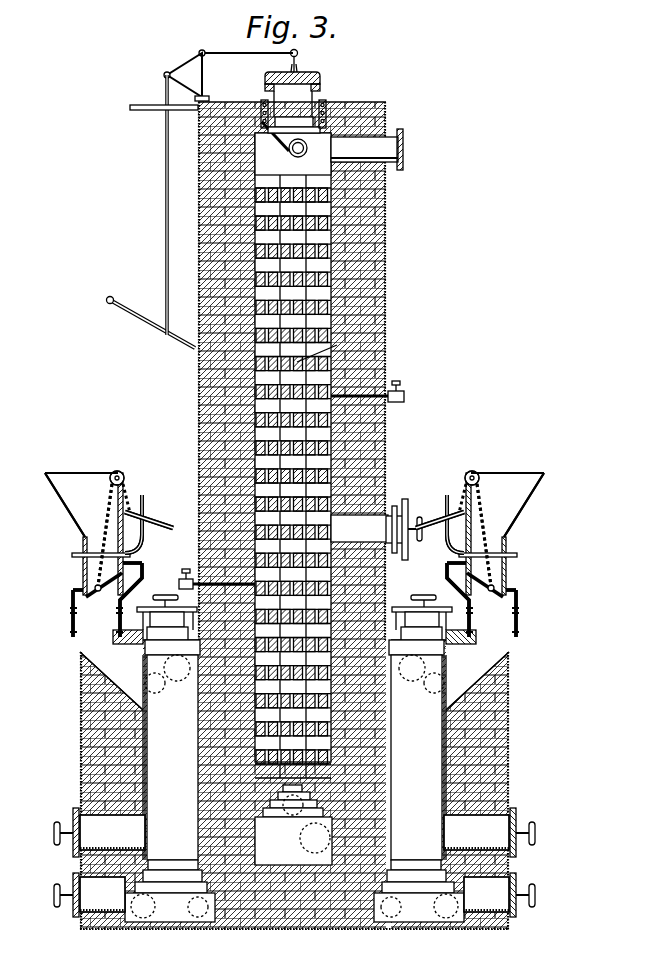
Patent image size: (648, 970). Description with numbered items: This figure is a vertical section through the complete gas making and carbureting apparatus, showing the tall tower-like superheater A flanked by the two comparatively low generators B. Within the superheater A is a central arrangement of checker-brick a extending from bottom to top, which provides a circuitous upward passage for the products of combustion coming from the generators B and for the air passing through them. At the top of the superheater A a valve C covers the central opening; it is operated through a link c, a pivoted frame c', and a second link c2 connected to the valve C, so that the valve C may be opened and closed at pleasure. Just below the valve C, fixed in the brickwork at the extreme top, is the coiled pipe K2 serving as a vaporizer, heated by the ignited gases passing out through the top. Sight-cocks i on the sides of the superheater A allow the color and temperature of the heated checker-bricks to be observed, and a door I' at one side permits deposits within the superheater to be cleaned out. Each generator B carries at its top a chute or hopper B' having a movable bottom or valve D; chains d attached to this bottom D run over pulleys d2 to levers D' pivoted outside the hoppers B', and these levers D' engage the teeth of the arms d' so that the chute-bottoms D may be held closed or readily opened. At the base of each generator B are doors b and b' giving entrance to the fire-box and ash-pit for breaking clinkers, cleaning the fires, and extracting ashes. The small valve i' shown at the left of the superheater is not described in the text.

The checker-brick a is at (388, 333).
The superheater A is at (400, 447).
The valve C is at (320, 80).
The coiled pipe vaporizer K2 is at (331, 103).
The link c is at (164, 205).
The pivoted frame c' is at (158, 195).
The link c2 is at (242, 55).
The sight-cock i is at (376, 393).
The valve i' is at (210, 576).
The door I' is at (376, 517).
The chute or hopper B' is at (292, 505).
The pulley d2 is at (123, 474).
The chain d is at (295, 535).
The toothed arm d' is at (296, 500).
The lever D' is at (294, 500).
The movable bottom or valve D is at (281, 600).
The generator B is at (286, 717).
The door b is at (286, 822).
The door b' is at (287, 903).